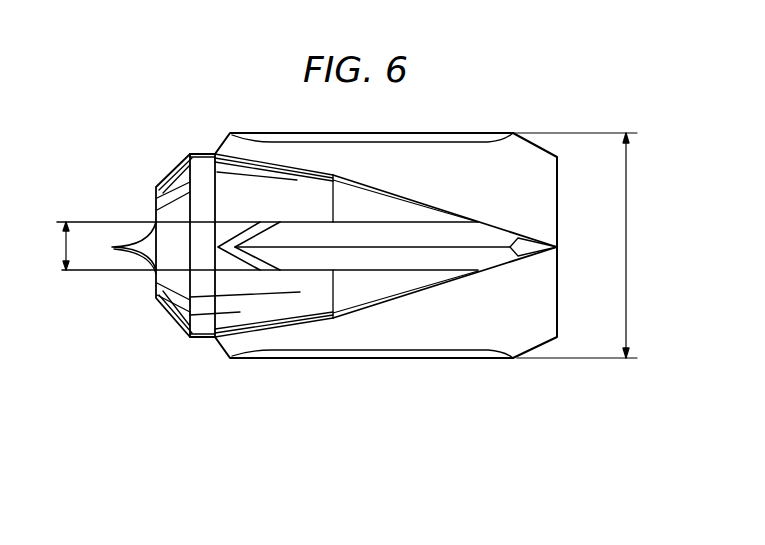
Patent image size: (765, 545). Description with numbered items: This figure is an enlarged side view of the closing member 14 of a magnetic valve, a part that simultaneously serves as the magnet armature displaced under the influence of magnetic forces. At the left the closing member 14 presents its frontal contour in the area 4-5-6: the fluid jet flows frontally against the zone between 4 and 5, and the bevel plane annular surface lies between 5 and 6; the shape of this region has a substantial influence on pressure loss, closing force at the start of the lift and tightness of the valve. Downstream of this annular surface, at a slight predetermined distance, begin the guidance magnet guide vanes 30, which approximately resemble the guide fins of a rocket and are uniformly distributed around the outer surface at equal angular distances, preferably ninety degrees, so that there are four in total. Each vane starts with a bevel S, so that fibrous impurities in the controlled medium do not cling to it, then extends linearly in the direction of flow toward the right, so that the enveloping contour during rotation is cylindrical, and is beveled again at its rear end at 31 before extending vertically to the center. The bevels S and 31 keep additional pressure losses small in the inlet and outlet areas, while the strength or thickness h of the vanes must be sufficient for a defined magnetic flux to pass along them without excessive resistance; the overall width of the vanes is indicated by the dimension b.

The closing member zone 4 is at (112, 247).
The bevel plane annular surface boundary 5 is at (162, 245).
The bevel plane annular surface boundary 6 is at (192, 235).
The closing member 14 is at (250, 305).
The guidance magnet guide vanes 30 is at (460, 153).
The rear bevel 31 is at (540, 147).
The bevel S is at (223, 140).
The vane thickness h is at (53, 246).
The width dimension b is at (579, 245).